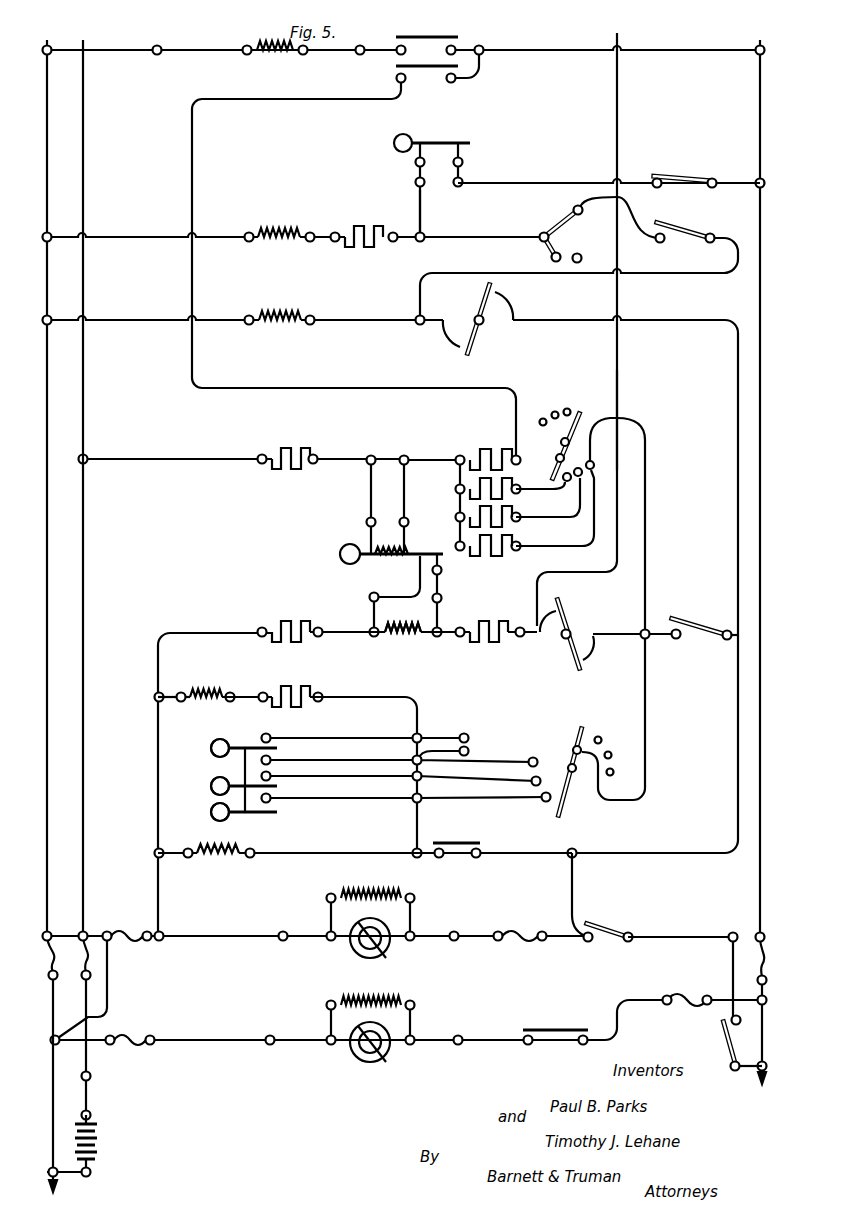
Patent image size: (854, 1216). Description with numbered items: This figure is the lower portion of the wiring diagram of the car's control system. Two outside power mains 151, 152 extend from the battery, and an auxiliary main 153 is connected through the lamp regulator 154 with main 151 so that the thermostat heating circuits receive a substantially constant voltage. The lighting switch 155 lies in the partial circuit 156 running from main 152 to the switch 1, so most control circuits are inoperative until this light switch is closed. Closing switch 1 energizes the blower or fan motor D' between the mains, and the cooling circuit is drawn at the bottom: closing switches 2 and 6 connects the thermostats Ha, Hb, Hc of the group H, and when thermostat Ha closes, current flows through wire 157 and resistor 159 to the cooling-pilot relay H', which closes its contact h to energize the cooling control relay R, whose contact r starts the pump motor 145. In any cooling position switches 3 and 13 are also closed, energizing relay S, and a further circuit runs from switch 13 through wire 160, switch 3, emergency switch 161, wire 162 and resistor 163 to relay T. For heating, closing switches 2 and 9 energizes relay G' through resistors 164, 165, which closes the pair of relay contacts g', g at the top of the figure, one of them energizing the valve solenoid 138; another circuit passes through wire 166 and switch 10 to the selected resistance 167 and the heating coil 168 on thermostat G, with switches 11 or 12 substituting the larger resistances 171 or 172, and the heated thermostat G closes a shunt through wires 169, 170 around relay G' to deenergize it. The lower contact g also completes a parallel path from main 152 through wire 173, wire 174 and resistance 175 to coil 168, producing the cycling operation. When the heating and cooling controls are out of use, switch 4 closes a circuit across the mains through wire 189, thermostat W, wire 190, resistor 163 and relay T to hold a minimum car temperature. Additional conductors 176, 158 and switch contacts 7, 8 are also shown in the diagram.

The valve solenoid 138 is at (266, 62).
The wire 174 is at (189, 118).
The wire 173 is at (620, 60).
The conductor 176 is at (617, 379).
The wire 189 is at (520, 183).
The wire 190 is at (416, 203).
The wire 162 is at (458, 232).
The emergency switch 161 is at (540, 224).
The resistor 163 is at (368, 249).
The wire 160 is at (455, 278).
The wire 166 is at (647, 440).
The resistance 175 is at (473, 456).
The selected resistance 167 is at (550, 462).
The resistance 171 is at (506, 518).
The resistance 172 is at (500, 558).
The heating coil 168 is at (386, 566).
The wire 170 is at (440, 588).
The resistor 165 is at (283, 626).
The wire 169 is at (391, 626).
The resistor 164 is at (493, 645).
The conductor 158 is at (363, 707).
The resistor 159 is at (291, 690).
The wire 157 is at (355, 737).
The auxiliary main 153 is at (88, 880).
The power main 151 is at (47, 903).
The power main 152 is at (762, 905).
The lamp regulator 154 is at (98, 1142).
The partial circuit 156 is at (688, 937).
The lighting switch 155 is at (722, 1032).
The motor 145 is at (383, 1060).
The switch 1 is at (608, 932).
The switch 2 is at (697, 626).
The switch 3 is at (682, 229).
The switch 4 is at (678, 176).
The switch 6 is at (548, 794).
The contact 7 is at (541, 776).
The contact 8 is at (537, 756).
The switch 9 is at (572, 624).
The switch 10 is at (563, 484).
The switch 11 is at (581, 478).
The switch 12 is at (594, 468).
The switch 13 is at (482, 330).
The thermostat W is at (447, 132).
The relay T is at (270, 233).
The relay S is at (281, 306).
The thermostat G is at (391, 510).
The thermostat assembly H is at (224, 780).
The cooling control relay R is at (221, 862).
The blower or fan motor D' is at (371, 931).
The cooling-pilot relay H' is at (196, 681).
The relay G' is at (403, 644).
The thermostat Hc is at (233, 748).
The thermostat Hb is at (228, 790).
The thermostat Ha is at (232, 817).
The relay contact h is at (466, 838).
The relay contact r is at (555, 1027).
The relay contact g is at (437, 80).
The contact g' is at (427, 48).